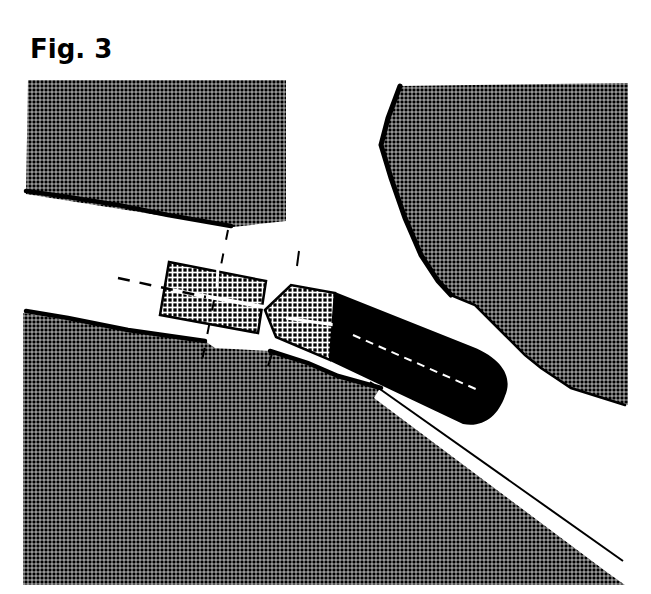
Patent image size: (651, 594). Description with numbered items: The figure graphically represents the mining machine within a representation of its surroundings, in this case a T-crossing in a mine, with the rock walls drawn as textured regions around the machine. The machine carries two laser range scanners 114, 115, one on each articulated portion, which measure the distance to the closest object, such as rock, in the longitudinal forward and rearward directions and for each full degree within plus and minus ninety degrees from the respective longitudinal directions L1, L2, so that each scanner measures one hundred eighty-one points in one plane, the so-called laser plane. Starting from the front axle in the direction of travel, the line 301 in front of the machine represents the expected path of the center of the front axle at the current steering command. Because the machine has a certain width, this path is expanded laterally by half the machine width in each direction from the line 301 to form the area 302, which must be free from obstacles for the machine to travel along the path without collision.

The laser range scanner 114 is at (278, 304).
The laser range scanner 115 is at (205, 290).
The line 301 is at (436, 381).
The area 302 is at (488, 406).
The longitudinal direction L1 is at (436, 340).
The longitudinal direction L2 is at (146, 279).